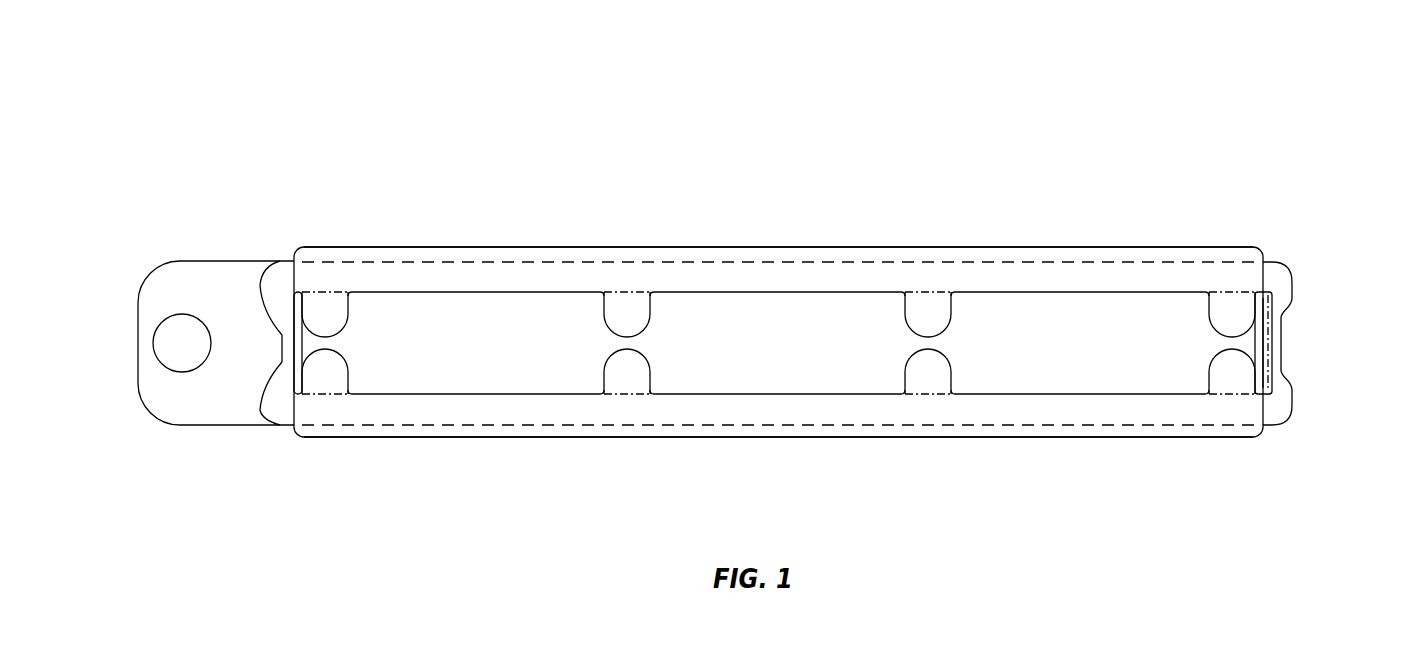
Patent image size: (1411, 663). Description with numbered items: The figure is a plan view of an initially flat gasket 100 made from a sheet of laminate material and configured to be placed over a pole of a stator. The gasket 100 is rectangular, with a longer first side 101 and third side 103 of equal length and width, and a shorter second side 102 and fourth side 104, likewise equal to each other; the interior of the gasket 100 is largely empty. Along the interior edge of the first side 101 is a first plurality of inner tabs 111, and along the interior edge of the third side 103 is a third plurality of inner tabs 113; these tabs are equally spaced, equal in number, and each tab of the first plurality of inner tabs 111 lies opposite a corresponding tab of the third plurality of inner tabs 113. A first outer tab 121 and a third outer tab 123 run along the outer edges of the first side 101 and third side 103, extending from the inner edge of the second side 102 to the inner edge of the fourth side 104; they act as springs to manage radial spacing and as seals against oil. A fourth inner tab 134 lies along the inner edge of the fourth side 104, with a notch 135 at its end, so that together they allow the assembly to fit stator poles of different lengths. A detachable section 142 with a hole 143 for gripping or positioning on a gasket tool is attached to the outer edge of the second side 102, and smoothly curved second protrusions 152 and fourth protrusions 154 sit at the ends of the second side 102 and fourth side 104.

The gasket 100 is at (1017, 100).
The first side 101 is at (1023, 270).
The second side 102 is at (283, 348).
The third side 103 is at (782, 405).
The fourth side 104 is at (1282, 352).
The first plurality of inner tabs 111 is at (925, 292).
The third plurality of inner tabs 113 is at (925, 394).
The first outer tab 121 is at (732, 247).
The third outer tab 123 is at (615, 440).
The fourth inner tab 134 is at (1255, 343).
The notch 135 is at (1273, 393).
The detachable section 142 is at (222, 258).
The hole 143 is at (160, 315).
The second protrusions 152 is at (262, 410).
The fourth protrusions 154 is at (1295, 270).